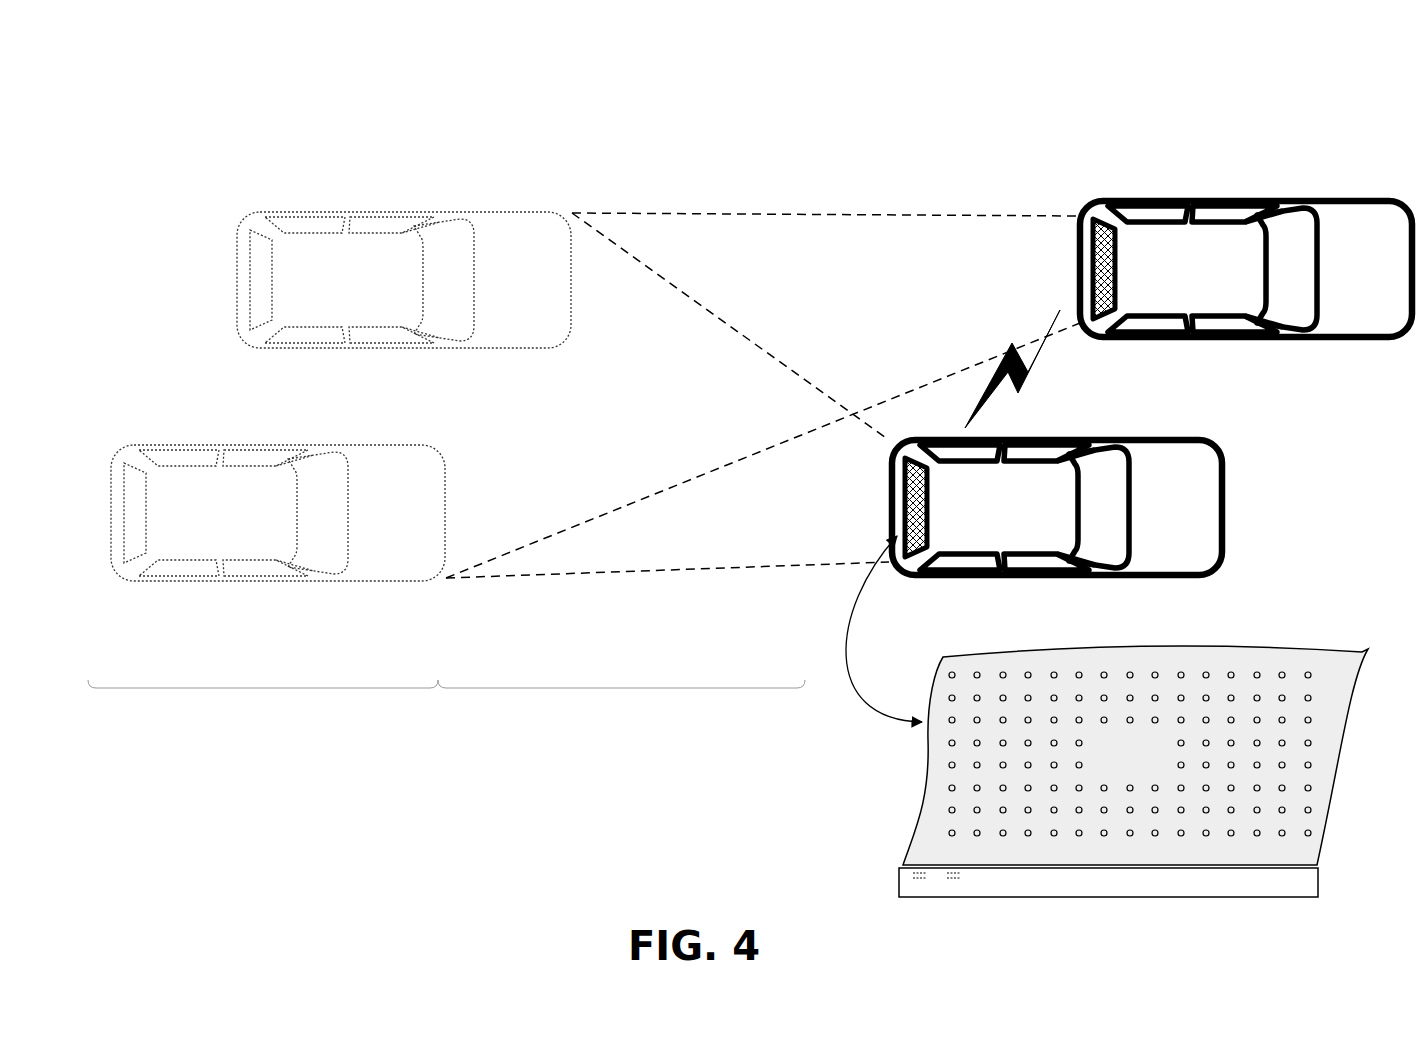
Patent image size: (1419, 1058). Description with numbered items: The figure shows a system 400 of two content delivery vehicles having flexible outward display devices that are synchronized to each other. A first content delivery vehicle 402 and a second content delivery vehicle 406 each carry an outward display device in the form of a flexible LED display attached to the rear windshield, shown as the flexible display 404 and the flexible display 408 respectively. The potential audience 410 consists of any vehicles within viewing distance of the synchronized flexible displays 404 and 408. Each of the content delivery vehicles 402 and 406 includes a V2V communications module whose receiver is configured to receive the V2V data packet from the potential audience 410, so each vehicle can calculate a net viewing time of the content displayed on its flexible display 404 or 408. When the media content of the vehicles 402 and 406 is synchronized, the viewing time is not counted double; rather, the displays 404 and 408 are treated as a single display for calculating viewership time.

The system 400 is at (212, 70).
The content delivery vehicle 402 is at (1350, 220).
The flexible display 404 is at (1087, 248).
The content delivery vehicle 406 is at (1160, 462).
The flexible display 408 is at (903, 490).
The potential audience 410 is at (446, 480).